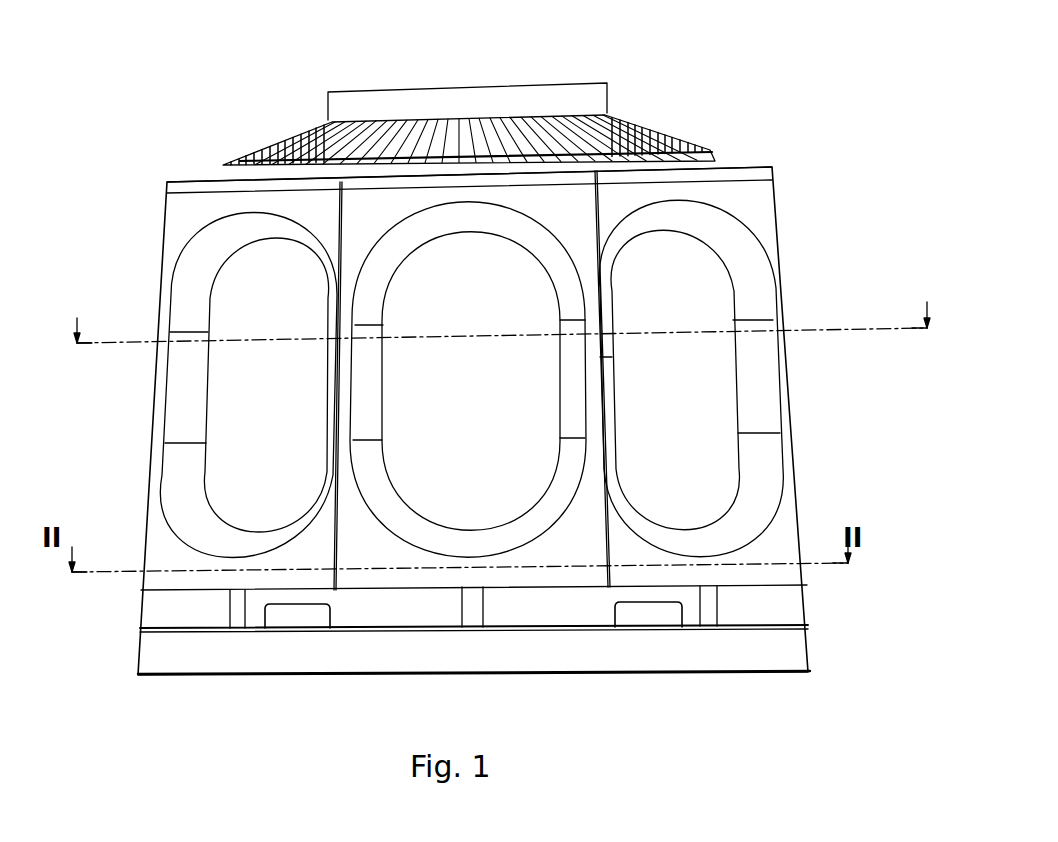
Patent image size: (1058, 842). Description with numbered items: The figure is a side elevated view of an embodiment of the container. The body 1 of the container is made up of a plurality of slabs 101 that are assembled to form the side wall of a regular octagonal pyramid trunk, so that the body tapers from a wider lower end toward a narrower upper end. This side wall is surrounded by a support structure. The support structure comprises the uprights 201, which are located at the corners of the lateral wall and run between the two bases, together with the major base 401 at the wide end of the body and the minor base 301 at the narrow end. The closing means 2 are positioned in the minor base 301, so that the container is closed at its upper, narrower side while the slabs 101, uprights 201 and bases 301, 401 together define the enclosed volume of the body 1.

The body 1 is at (780, 232).
The closing means 2 is at (645, 118).
The slabs 101 is at (258, 357).
The uprights 201 is at (172, 425).
The minor base 301 is at (183, 183).
The major base 401 is at (792, 605).